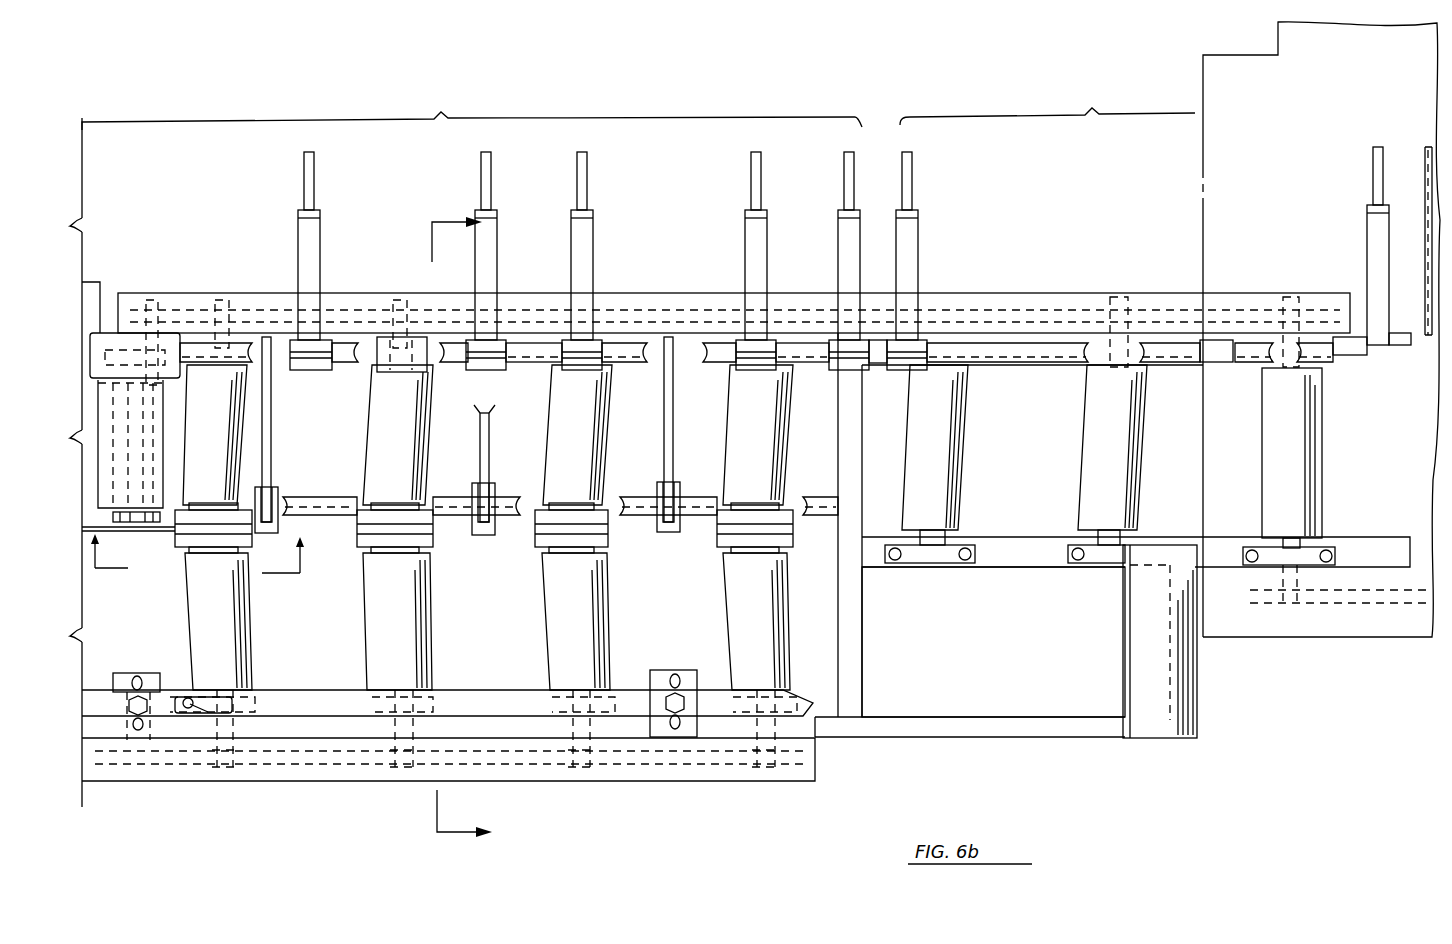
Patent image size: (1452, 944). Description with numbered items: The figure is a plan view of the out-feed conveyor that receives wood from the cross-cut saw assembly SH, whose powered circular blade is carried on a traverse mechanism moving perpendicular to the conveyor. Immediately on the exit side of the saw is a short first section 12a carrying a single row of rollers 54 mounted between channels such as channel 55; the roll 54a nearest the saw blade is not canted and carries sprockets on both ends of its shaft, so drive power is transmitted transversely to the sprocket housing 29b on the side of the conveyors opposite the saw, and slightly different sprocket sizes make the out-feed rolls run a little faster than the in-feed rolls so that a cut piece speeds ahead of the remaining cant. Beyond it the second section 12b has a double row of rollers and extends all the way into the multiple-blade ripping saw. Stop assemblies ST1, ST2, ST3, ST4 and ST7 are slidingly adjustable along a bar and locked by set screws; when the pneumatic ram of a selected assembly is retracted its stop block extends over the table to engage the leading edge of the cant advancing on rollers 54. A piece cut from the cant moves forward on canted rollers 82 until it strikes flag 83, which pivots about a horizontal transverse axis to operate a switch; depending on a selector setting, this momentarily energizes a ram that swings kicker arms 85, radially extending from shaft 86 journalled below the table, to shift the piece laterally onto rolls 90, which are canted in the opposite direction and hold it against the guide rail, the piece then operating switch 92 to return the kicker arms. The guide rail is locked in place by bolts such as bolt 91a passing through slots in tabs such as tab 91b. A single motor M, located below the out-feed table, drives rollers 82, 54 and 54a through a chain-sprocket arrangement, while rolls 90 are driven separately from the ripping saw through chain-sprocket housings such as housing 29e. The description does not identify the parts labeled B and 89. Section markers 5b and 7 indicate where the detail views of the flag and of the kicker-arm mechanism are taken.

The second section of out-feed conveyor 12b is at (472, 111).
The first section of out-feed conveyor 12a is at (1047, 105).
The stop assembly ST7 is at (298, 240).
The stop assembly ST4 is at (748, 233).
The stop assembly ST3 is at (840, 243).
The stop assembly ST2 is at (913, 232).
The stop assembly ST1 is at (1367, 243).
The saw assembly SH is at (1203, 175).
The bar B is at (1424, 205).
The motor M is at (176, 418).
The sprocket housing 29b is at (1318, 627).
The chain-sprocket housing 29e is at (762, 778).
The roller 54 is at (957, 440).
The roll 54a is at (1305, 420).
The channel 55 is at (1040, 562).
The roller 82 is at (375, 425).
The flag 83 is at (138, 488).
The kicker arm 85 is at (270, 412).
The shaft 86 is at (340, 508).
The base bar 89 is at (815, 728).
The roll 90 is at (245, 632).
The bolt 91a is at (133, 705).
The tab 91b is at (130, 673).
The switch 92 is at (218, 700).
The section line 5b is at (197, 553).
The section line 7 is at (462, 530).